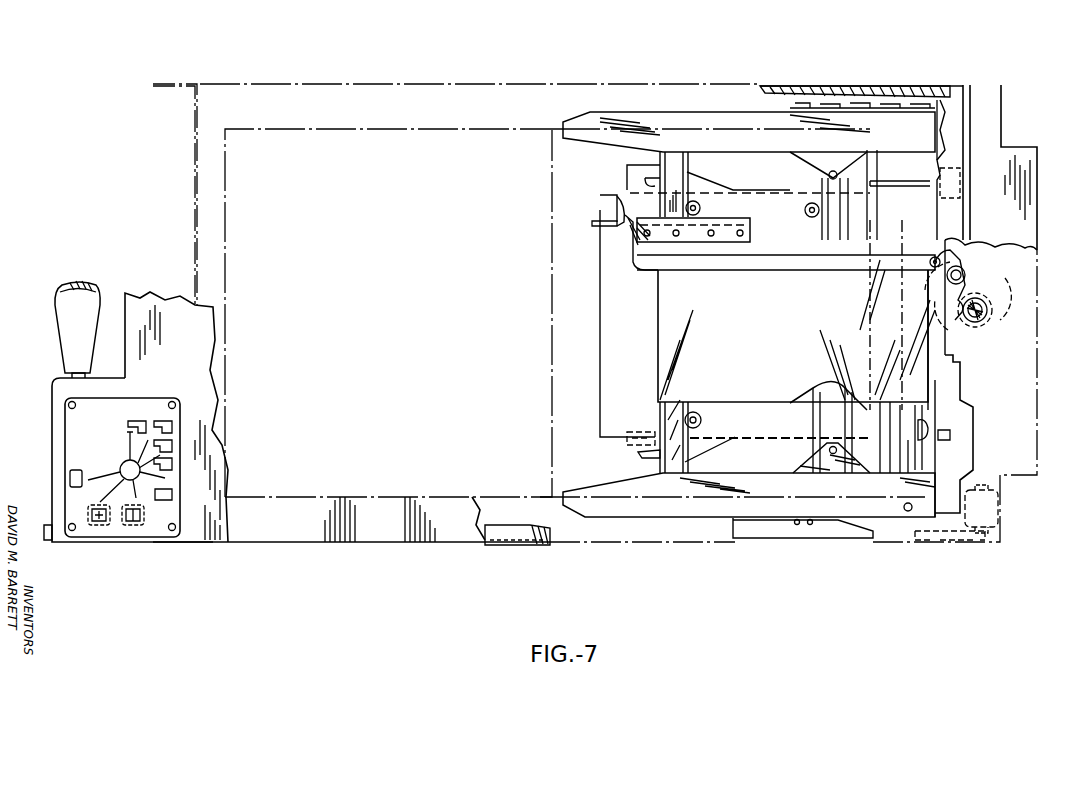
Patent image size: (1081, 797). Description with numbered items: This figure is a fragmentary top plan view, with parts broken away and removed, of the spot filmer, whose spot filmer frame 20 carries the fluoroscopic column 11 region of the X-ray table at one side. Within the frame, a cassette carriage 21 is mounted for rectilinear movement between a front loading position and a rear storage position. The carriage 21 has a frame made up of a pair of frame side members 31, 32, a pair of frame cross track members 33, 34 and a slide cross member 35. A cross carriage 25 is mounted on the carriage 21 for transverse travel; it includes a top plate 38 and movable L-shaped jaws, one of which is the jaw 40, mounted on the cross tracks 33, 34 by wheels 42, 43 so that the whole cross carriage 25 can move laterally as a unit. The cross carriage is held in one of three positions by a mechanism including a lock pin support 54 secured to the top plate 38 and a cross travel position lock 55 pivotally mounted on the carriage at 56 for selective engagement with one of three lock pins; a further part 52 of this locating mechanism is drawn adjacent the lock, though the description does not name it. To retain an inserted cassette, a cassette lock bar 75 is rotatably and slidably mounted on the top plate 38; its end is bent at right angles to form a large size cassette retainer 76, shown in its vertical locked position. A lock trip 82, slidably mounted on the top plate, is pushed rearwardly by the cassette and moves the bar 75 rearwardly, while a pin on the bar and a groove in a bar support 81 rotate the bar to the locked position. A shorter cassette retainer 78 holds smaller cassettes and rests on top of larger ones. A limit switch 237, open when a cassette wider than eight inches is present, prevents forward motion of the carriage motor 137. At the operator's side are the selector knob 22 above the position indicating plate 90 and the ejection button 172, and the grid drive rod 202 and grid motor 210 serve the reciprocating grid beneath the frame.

The spot filmer frame 20 is at (566, 84).
The frame side member 31 is at (583, 114).
The frame cross track member 33 is at (658, 158).
The fluoroscopic column 11 is at (624, 178).
The shorter cassette retainer 78 is at (600, 201).
The large size cassette retainer 76 is at (597, 224).
The cassette lock bar 75 is at (618, 238).
The bar support 81 is at (700, 244).
The wheel 42 is at (700, 208).
The lock trip 82 is at (833, 263).
The cross carriage 25 is at (648, 333).
The forward motion preventing limit switch 237 is at (905, 165).
The slide cross member 35 is at (945, 150).
The carriage motor 137 is at (1018, 260).
The frame cross track member 34 is at (832, 395).
The movable jaw 40 is at (741, 410).
The wheel 43 is at (697, 408).
The top plate 38 is at (940, 400).
The lock pin support 54 is at (938, 422).
The latch 52 is at (940, 436).
The cross travel position lock 55 is at (900, 462).
The frame side member 32 is at (626, 518).
The cassette carriage 21 is at (700, 530).
The pivot 56 is at (908, 512).
The grid drive rod 202 is at (950, 541).
The grid motor 210 is at (1000, 500).
The position indicating plate 90 is at (70, 420).
The selector knob 22 is at (126, 450).
The ejection button 172 is at (46, 542).